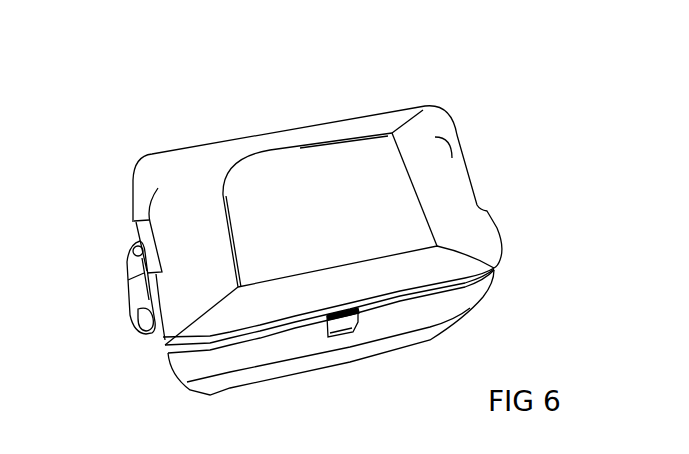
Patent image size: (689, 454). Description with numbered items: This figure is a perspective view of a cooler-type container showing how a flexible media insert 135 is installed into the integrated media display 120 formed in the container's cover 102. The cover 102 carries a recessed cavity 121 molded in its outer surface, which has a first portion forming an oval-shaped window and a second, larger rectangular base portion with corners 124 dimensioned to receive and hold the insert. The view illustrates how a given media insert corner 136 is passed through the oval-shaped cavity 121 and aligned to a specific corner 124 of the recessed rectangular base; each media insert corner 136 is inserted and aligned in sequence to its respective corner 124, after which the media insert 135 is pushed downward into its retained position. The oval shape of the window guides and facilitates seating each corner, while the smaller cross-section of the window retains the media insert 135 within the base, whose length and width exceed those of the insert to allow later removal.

The cover 102 is at (129, 190).
The integrated media display 120 is at (318, 150).
The cavity 121 is at (223, 168).
The corner 124 is at (202, 162).
The media insert 135 is at (403, 237).
The media insert corner 136 is at (403, 110).